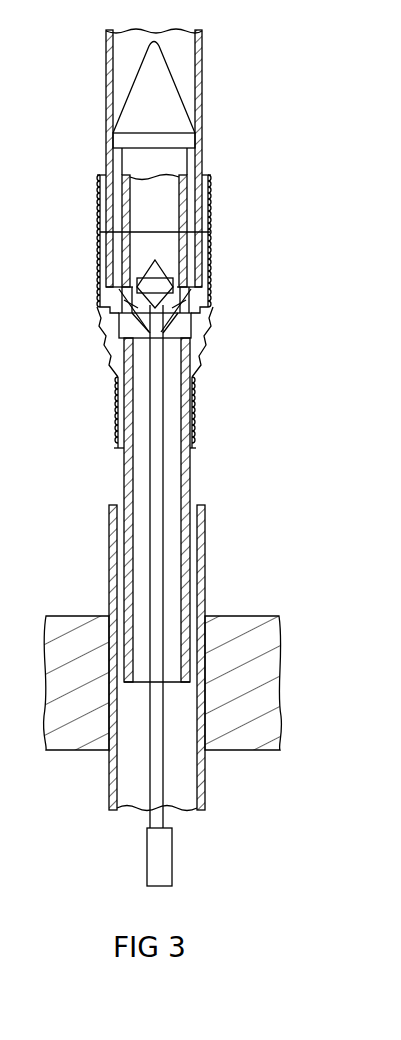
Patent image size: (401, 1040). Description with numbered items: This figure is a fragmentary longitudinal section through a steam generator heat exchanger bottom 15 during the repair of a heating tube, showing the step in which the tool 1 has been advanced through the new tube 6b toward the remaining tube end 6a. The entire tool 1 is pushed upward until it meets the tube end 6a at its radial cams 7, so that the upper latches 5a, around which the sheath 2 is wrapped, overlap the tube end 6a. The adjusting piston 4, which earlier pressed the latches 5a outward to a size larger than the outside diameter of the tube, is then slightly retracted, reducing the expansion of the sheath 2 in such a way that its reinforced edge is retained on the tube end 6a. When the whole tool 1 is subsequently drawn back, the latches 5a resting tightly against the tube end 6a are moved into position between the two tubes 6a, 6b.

The tool 1 is at (139, 157).
The sheath 2 is at (213, 208).
The adjusting piston 4 is at (150, 285).
The upper latch 5a is at (204, 242).
The tube end 6a is at (203, 70).
The new tube 6b is at (206, 534).
The radial cams 7 is at (172, 293).
The bottom 15 is at (83, 616).